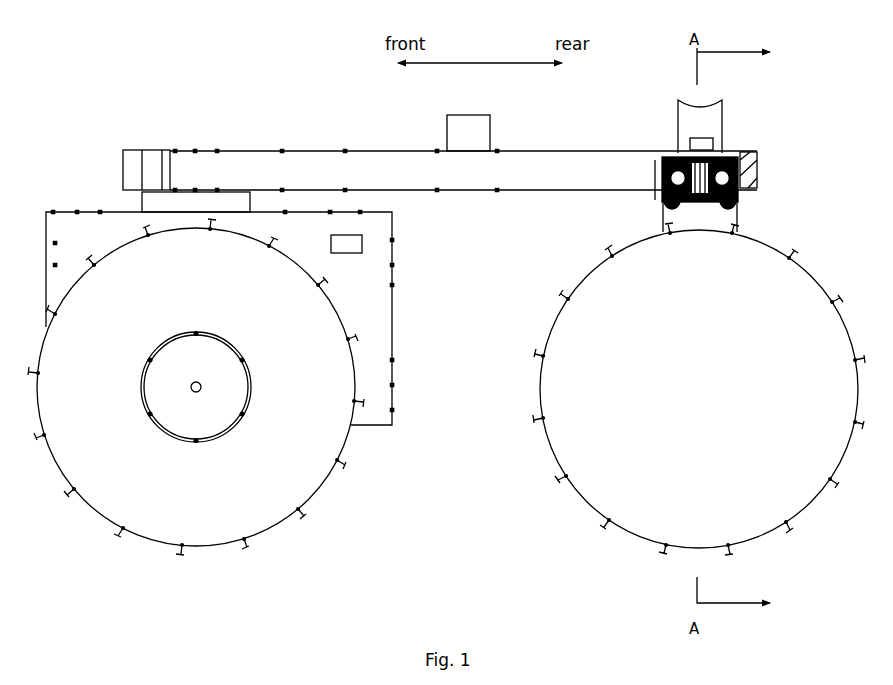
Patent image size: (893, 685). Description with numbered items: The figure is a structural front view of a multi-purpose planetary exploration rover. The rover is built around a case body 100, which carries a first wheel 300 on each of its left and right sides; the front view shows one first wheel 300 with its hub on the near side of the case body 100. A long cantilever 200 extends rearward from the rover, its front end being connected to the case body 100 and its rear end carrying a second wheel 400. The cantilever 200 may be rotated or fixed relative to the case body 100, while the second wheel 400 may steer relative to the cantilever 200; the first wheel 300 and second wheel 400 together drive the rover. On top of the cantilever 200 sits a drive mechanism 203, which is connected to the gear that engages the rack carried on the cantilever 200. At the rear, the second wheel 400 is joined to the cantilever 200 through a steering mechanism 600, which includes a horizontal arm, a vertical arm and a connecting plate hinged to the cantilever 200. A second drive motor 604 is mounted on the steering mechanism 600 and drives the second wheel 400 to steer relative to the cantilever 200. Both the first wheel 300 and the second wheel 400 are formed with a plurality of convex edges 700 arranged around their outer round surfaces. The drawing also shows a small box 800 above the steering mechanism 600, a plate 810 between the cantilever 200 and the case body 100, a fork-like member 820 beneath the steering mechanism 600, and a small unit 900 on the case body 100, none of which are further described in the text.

The case body 100 is at (362, 278).
The cantilever 200 is at (205, 148).
The drive mechanism 203 is at (445, 126).
The first wheel 300 is at (292, 428).
The second wheel 400 is at (642, 494).
The steering mechanism 600 is at (650, 214).
The second drive motor 604 is at (692, 130).
The convex edges 700 is at (302, 519).
The sensor box 800 is at (714, 145).
The front connector plate 810 is at (142, 200).
The rear wheel fork 820 is at (735, 218).
The control unit 900 is at (362, 243).